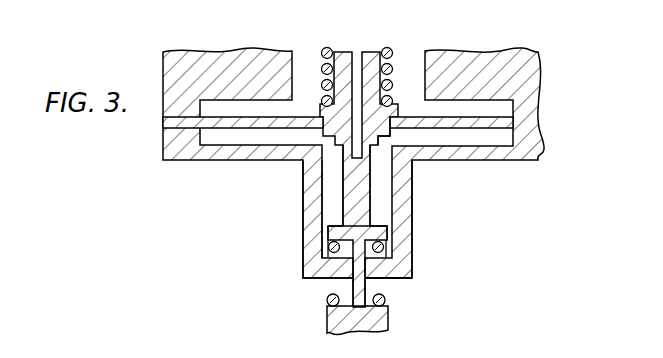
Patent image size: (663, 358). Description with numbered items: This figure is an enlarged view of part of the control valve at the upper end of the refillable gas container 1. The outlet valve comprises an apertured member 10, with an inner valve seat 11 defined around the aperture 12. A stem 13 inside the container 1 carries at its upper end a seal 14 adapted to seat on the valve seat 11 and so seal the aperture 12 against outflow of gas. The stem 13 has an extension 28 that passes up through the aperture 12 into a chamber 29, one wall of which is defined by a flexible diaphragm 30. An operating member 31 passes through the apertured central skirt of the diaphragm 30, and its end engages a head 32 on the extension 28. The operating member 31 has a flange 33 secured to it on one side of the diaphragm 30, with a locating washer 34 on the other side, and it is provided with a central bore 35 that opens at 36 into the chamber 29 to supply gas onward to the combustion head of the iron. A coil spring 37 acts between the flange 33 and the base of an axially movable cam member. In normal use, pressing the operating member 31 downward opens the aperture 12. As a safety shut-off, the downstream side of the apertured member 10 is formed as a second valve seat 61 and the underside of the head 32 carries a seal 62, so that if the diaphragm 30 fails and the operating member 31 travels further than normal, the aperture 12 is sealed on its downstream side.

The gas container 1 is at (195, 160).
The apertured member 10 is at (308, 214).
The inner valve seat 11 is at (402, 279).
The aperture 12 is at (352, 281).
The stem 13 is at (333, 327).
The seal 14 is at (386, 303).
The extension 28 is at (350, 258).
The chamber 29 is at (320, 166).
The flexible diaphragm 30 is at (228, 117).
The operating member 31 is at (381, 55).
The head 32 is at (382, 226).
The flange 33 is at (427, 60).
The locating washer 34 is at (413, 159).
The central bore 35 is at (358, 52).
The bore opening 36 is at (371, 166).
The coil spring 37 is at (325, 49).
The second valve seat 61 is at (338, 274).
The seal 62 is at (328, 246).